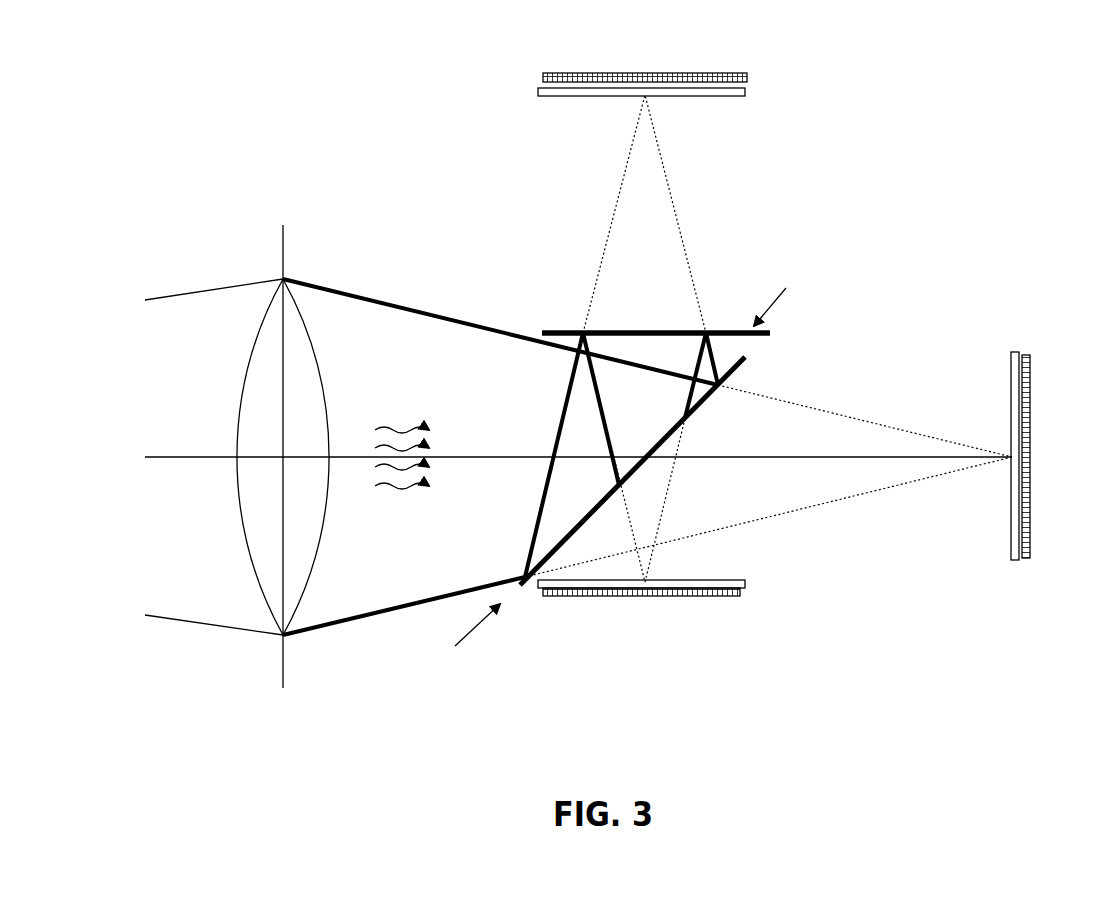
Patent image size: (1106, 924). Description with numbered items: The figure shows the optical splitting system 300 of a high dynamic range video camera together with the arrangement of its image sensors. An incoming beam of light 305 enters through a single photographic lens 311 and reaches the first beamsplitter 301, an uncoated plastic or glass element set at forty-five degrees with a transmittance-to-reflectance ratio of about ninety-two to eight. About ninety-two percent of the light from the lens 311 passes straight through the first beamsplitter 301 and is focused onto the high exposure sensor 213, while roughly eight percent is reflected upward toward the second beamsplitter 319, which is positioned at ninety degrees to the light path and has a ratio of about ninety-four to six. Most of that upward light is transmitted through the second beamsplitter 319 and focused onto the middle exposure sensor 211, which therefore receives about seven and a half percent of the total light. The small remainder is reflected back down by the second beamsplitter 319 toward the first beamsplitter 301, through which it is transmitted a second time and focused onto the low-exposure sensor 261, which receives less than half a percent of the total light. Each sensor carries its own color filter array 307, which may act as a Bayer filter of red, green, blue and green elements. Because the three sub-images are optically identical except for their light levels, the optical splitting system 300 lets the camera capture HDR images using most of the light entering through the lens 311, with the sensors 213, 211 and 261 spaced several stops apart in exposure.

The optical splitting system 300 is at (992, 96).
The lens 311 is at (258, 553).
The incoming beam of light 305 is at (400, 488).
The second beamsplitter 319 is at (570, 330).
The first beamsplitter 301 is at (746, 364).
The middle exposure (ME) sensor 211 is at (722, 73).
The low-exposure (LE) sensor 261 is at (730, 594).
The high exposure (HE) sensor 213 is at (1025, 560).
The color filter array 307 is at (566, 98).